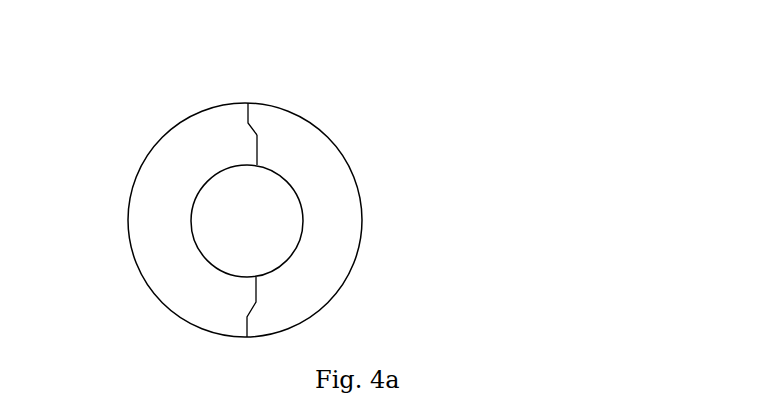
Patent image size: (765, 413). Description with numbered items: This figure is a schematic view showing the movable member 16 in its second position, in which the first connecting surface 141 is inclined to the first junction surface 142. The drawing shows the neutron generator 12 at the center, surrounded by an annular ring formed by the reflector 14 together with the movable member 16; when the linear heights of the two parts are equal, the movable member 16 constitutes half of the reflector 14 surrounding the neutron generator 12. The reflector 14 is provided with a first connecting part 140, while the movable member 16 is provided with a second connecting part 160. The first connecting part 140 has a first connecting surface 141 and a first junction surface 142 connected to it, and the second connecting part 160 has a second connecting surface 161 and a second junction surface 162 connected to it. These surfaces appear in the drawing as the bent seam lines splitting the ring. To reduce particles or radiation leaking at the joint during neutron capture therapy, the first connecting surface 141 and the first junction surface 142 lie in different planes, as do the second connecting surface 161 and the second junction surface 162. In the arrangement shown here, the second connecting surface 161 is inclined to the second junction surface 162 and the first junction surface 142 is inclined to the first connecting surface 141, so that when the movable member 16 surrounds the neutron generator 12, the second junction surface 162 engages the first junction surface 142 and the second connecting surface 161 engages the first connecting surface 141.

The neutron generator 12 is at (302, 222).
The reflector 14 is at (292, 138).
The movable member 16 is at (167, 258).
The first connecting part 140 is at (452, 87).
The first connecting surface 141 is at (345, 74).
The first junction surface 142 is at (362, 110).
The second connecting part 160 is at (452, 87).
The second connecting surface 161 is at (250, 104).
The second junction surface 162 is at (254, 129).